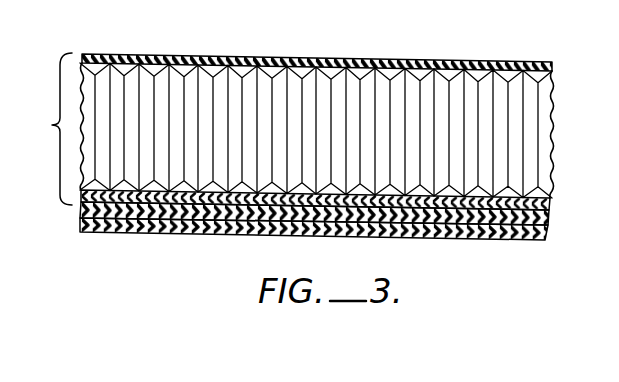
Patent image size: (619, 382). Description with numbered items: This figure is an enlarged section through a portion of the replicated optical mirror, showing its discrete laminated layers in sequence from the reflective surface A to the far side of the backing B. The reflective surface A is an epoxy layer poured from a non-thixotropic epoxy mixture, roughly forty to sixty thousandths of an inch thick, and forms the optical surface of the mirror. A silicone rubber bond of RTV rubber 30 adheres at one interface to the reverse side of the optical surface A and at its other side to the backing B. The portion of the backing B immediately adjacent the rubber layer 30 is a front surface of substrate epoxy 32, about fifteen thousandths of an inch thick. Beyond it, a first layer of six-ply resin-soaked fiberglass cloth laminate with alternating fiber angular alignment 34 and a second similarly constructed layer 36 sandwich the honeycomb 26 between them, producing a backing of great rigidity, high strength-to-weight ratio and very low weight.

The second fiberglass cloth laminate layer 36 is at (546, 66).
The honeycomb 26 is at (531, 125).
The first fiberglass cloth laminate layer 34 is at (546, 198).
The substrate epoxy 32 is at (546, 208).
The RTV rubber 30 is at (546, 225).
The reflective surface A is at (338, 226).
The backing B is at (49, 129).